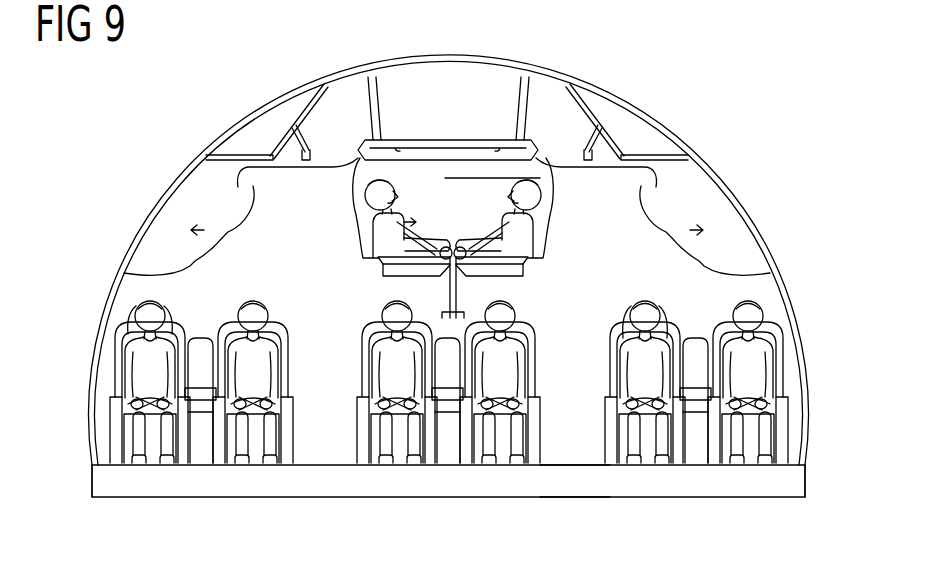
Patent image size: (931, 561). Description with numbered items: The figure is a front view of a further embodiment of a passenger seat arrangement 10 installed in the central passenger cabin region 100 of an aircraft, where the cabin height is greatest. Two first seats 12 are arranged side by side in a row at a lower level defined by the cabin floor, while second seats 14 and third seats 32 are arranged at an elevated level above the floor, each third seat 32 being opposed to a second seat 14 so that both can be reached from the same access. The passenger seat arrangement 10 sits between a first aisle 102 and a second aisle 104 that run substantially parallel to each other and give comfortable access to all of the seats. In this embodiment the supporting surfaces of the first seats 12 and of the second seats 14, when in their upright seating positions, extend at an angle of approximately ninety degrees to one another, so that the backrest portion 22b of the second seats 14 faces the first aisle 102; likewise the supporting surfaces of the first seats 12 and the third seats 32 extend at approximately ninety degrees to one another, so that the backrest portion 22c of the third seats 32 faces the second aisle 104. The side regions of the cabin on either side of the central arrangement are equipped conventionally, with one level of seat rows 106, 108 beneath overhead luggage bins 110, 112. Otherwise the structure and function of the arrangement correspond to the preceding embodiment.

The passenger cabin region 100 is at (688, 84).
The passenger seat arrangement 10 is at (667, 262).
The first seats 12 is at (353, 333).
The second seats 14 is at (350, 241).
The third seats 32 is at (550, 241).
The backrest portion 22b is at (378, 261).
The backrest portion 22c is at (530, 261).
The first aisle 102 is at (325, 453).
The second aisle 104 is at (570, 453).
The seat row 106 is at (152, 367).
The seat row 108 is at (748, 367).
The overhead luggage bin 110 is at (192, 188).
The overhead luggage bin 112 is at (703, 188).